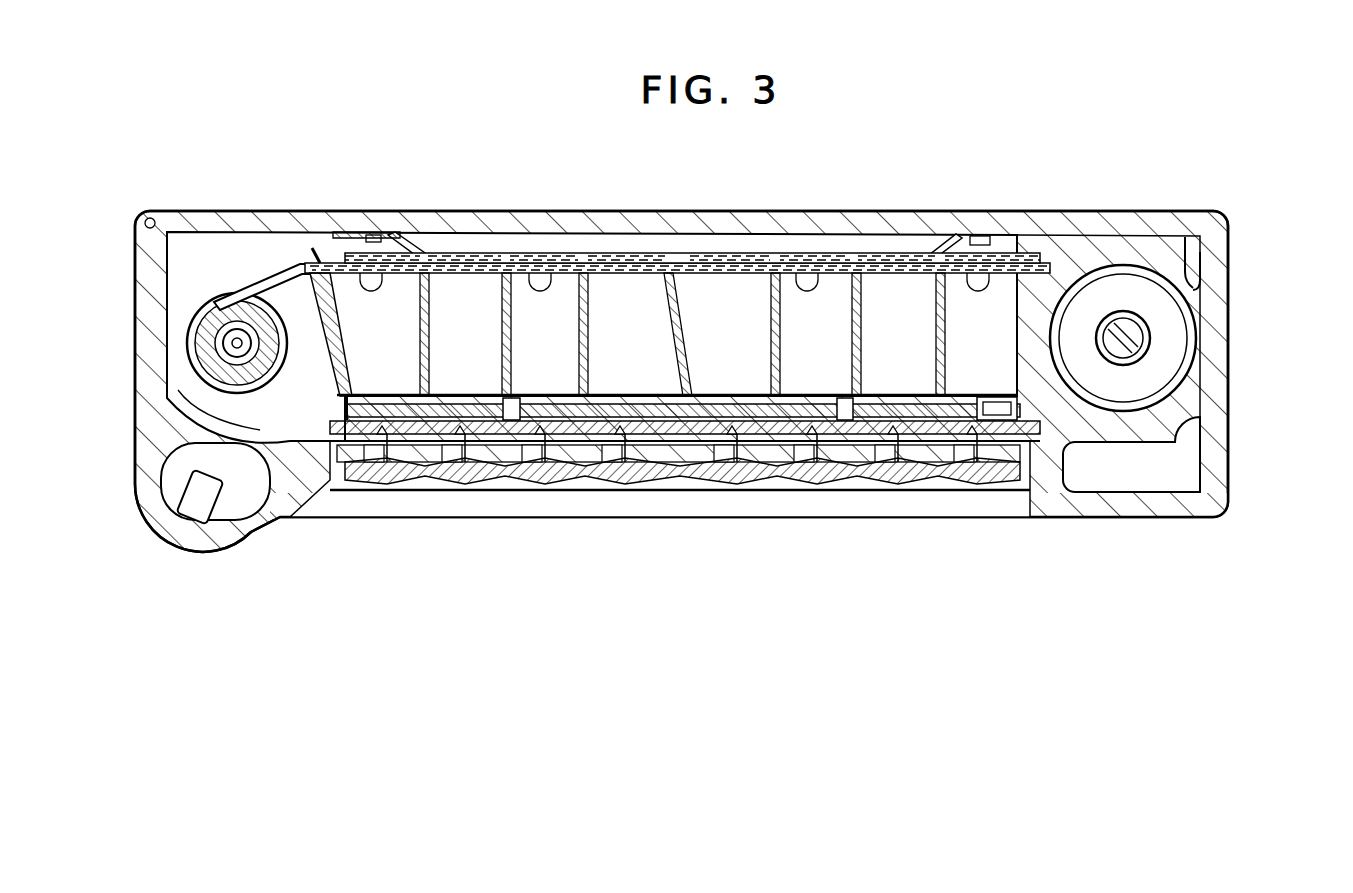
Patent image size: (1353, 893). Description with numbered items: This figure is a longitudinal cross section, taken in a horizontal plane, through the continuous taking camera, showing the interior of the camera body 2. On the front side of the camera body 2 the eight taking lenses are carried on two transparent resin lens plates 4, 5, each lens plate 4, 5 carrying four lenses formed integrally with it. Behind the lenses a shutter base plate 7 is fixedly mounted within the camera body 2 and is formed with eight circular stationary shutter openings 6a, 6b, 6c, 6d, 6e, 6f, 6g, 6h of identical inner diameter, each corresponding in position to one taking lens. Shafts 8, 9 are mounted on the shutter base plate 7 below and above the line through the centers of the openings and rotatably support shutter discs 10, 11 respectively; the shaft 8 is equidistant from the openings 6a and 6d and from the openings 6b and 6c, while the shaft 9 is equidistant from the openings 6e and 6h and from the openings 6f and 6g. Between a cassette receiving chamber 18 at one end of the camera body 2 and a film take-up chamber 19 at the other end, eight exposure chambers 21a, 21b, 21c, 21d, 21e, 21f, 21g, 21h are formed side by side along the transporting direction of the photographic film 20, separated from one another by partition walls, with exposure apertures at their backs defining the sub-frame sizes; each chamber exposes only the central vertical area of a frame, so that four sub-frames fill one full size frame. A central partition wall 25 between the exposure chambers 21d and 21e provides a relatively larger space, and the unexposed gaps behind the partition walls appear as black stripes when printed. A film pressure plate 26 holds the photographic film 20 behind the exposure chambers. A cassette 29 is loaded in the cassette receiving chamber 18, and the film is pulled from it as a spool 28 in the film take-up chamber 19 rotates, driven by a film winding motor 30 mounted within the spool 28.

The camera body 2 is at (135, 350).
The lens plate 4 is at (370, 490).
The lens plate 5 is at (722, 492).
The stationary shutter opening 6a is at (386, 440).
The stationary shutter opening 6b is at (465, 440).
The stationary shutter opening 6c is at (543, 440).
The stationary shutter opening 6d is at (623, 440).
The stationary shutter opening 6e is at (737, 440).
The stationary shutter opening 6f is at (817, 440).
The stationary shutter opening 6g is at (898, 440).
The stationary shutter opening 6h is at (977, 440).
The shutter base plate 7 is at (1073, 470).
The shaft 8 is at (518, 397).
The shaft 9 is at (840, 397).
The shutter disc 10 is at (387, 395).
The shutter disc 11 is at (973, 397).
The cassette receiving chamber 18 is at (1195, 291).
The film take-up chamber 19 is at (178, 320).
The photographic film 20 is at (287, 300).
The exposure chamber 21a is at (407, 256).
The exposure chamber 21b is at (456, 274).
The exposure chamber 21c is at (550, 256).
The exposure chamber 21d is at (613, 274).
The exposure chamber 21e is at (727, 274).
The exposure chamber 21f is at (818, 256).
The exposure chamber 21g is at (890, 274).
The exposure chamber 21h is at (1010, 256).
The central partition wall 25 is at (695, 275).
The film pressure plate 26 is at (352, 244).
The spool 28 is at (228, 312).
The cassette 29 is at (1165, 350).
The film winding motor 30 is at (160, 372).